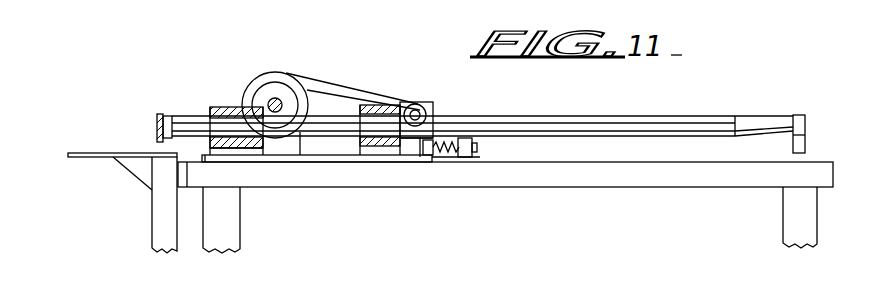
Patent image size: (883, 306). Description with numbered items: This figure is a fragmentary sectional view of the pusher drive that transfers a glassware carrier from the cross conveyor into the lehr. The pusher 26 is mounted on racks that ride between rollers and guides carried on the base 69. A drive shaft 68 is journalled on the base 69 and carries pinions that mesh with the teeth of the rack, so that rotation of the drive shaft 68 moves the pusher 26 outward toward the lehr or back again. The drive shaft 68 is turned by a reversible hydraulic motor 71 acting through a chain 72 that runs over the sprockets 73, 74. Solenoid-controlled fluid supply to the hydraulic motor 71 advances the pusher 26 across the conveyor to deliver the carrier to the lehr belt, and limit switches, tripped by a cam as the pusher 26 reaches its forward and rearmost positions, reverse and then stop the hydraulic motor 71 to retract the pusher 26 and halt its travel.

The pusher 26 is at (157, 120).
The drive shaft 68 is at (270, 101).
The base 69 is at (624, 156).
The reversible hydraulic motor 71 is at (438, 74).
The chain 72 is at (358, 60).
The sprocket 73 is at (626, 93).
The sprocket 74 is at (286, 40).